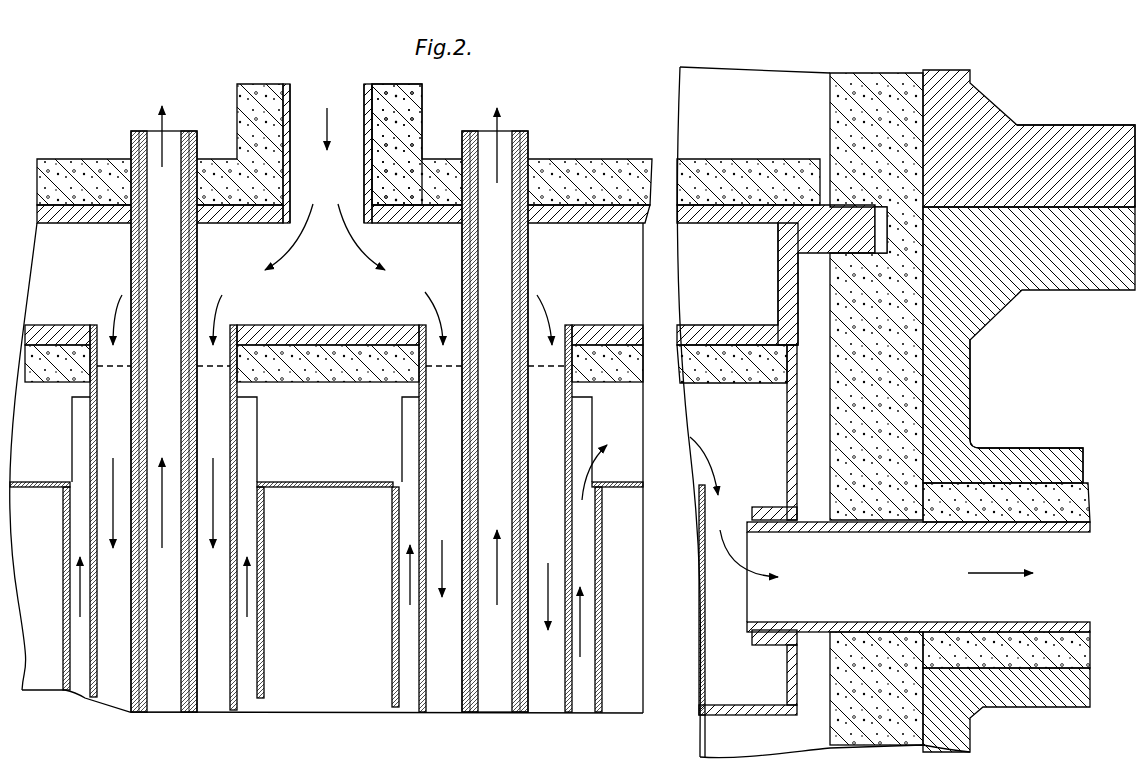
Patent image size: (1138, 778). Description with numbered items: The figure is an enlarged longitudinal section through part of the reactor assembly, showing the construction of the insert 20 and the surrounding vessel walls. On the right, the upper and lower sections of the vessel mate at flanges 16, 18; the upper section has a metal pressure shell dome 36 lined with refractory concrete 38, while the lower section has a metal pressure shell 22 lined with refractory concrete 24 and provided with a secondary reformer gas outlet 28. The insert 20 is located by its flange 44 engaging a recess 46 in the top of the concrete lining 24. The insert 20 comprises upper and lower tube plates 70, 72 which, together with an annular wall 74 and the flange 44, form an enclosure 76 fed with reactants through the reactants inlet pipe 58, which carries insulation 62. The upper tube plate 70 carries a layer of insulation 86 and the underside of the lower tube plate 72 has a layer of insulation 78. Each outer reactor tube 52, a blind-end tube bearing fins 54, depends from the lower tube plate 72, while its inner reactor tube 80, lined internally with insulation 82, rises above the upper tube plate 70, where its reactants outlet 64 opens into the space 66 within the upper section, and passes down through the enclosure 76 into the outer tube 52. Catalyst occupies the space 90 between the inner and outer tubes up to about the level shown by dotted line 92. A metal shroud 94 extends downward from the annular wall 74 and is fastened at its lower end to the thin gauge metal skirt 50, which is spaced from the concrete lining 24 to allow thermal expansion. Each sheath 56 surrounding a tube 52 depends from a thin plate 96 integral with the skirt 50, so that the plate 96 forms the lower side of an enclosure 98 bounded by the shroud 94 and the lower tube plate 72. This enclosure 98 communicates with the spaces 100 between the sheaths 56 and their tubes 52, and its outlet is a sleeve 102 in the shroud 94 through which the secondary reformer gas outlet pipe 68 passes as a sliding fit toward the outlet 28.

The flange 16 is at (1097, 148).
The flange 18 is at (1082, 285).
The insert 20 is at (90, 150).
The metal pressure shell 22 is at (957, 406).
The refractory concrete 24 is at (925, 378).
The secondary reformer gas outlet 28 is at (1040, 465).
The metal pressure shell dome 36 is at (933, 83).
The refractory concrete 38 is at (870, 82).
The flange 44 is at (827, 238).
The recess 46 is at (887, 233).
The skirt 50 is at (700, 745).
The tube 52 is at (425, 700).
The fins 54 is at (590, 415).
The sheath 56 is at (392, 703).
The reactants inlet pipe 58 is at (300, 105).
The insulation 62 is at (412, 107).
The reactants outlet 64 is at (526, 133).
The space 66 is at (523, 96).
The secondary reformer gas outlet pipe 68 is at (855, 534).
The upper tube plate 70 is at (557, 215).
The lower tube plate 72 is at (616, 330).
The annular wall 74 is at (785, 290).
The enclosure 76 is at (315, 301).
The layer of insulation 78 is at (710, 370).
The inner reactor tube 80 is at (470, 242).
The layer of insulation 82 is at (470, 268).
The layer of insulation 86 is at (623, 160).
The space 90 is at (534, 546).
The dotted line 92 is at (548, 366).
The metal shroud 94 is at (788, 430).
The thin plate 96 is at (323, 488).
The enclosure 98 is at (309, 443).
The space 100 is at (593, 718).
The sleeve 102 is at (763, 510).